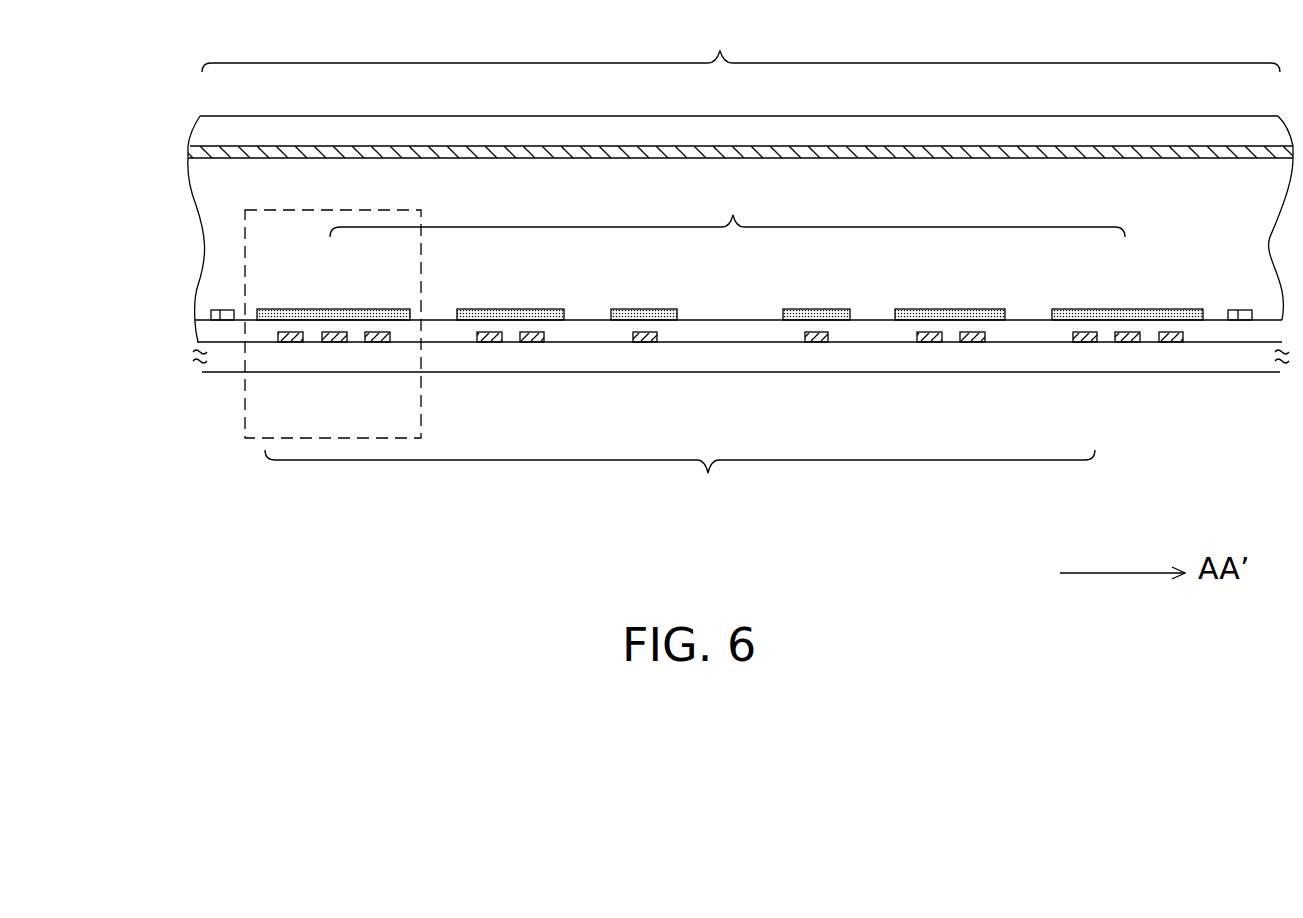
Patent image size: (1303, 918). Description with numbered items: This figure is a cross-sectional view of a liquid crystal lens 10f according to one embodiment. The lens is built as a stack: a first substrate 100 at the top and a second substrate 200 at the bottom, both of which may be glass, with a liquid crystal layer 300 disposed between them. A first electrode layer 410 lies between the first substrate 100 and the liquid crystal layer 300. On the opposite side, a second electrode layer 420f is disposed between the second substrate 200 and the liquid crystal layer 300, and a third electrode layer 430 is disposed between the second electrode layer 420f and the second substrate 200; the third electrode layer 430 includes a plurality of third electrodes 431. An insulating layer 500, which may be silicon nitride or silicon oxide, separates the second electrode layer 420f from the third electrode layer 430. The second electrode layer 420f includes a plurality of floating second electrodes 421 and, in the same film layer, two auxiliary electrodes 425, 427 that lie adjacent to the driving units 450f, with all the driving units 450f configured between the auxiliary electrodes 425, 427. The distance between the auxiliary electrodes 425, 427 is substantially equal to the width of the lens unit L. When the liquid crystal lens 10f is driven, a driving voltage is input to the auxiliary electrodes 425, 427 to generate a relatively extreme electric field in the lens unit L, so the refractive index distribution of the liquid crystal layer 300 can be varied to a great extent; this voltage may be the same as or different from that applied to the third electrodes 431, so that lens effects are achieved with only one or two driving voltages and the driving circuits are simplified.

The first substrate 100 is at (200, 133).
The first electrode layer 410 is at (190, 152).
The liquid crystal layer 300 is at (207, 242).
The insulating layer 500 is at (200, 330).
The second substrate 200 is at (200, 362).
The auxiliary electrode 425 is at (223, 322).
The auxiliary electrode 427 is at (1240, 322).
The second electrodes 421 is at (344, 308).
The second electrode layer 420f is at (727, 208).
The third electrodes 431 is at (1086, 342).
The third electrode layer 430 is at (680, 482).
The driving units 450f is at (245, 410).
The liquid crystal lens 10f is at (1266, 510).
The lens unit L is at (741, 40).